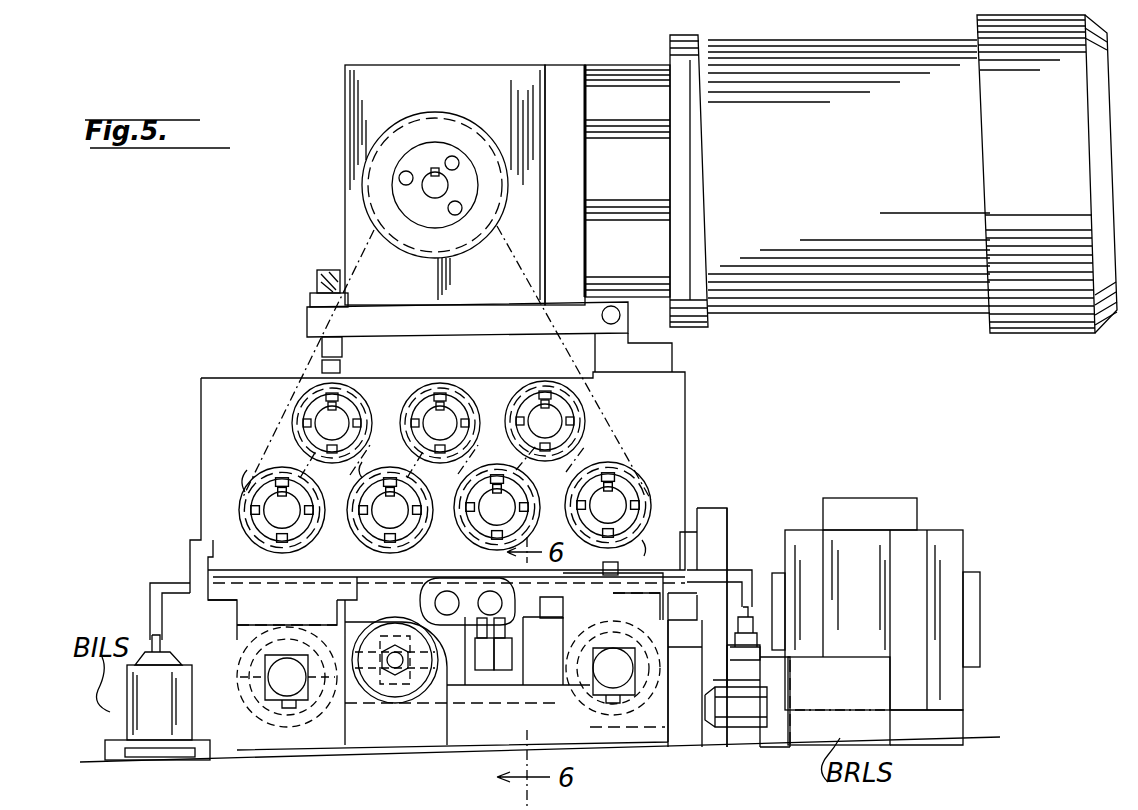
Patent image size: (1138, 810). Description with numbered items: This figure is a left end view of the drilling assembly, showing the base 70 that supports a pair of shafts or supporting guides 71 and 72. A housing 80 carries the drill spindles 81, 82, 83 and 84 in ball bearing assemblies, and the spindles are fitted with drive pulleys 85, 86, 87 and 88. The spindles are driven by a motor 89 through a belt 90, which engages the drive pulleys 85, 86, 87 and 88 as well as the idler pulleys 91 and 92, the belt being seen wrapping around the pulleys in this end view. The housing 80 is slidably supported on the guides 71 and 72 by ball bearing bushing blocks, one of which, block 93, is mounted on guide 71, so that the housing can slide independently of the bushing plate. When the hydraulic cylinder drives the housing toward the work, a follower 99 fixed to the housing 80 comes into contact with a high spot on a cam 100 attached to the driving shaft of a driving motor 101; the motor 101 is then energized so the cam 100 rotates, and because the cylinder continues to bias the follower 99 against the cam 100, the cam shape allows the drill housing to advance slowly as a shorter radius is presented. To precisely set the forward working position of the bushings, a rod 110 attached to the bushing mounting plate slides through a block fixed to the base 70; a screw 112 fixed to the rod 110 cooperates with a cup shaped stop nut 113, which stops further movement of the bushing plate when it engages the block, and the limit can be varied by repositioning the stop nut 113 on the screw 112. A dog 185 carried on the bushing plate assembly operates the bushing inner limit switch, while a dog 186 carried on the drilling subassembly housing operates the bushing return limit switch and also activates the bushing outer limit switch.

The base 70 is at (633, 738).
The supporting guide 71 is at (608, 676).
The supporting guide 72 is at (280, 678).
The housing 80 is at (686, 414).
The drill spindle 81 is at (614, 502).
The drill spindle 82 is at (490, 514).
The drill spindle 83 is at (384, 517).
The drill spindle 84 is at (277, 517).
The drive pulley 85 is at (630, 535).
The drive pulley 86 is at (515, 478).
The drive pulley 87 is at (400, 470).
The drive pulley 88 is at (240, 495).
The motor 89 is at (356, 150).
The belt 90 is at (345, 242).
The idler pulley 91 is at (474, 392).
The idler pulley 92 is at (352, 400).
The ball bearing bushing block 93 is at (604, 602).
The follower 99 is at (703, 642).
The cam 100 is at (706, 508).
The driving motor 101 is at (918, 515).
The rod 110 is at (412, 690).
The screw 112 is at (388, 672).
The stop nut 113 is at (390, 596).
The dog 185 is at (165, 580).
The dog 186 is at (738, 565).